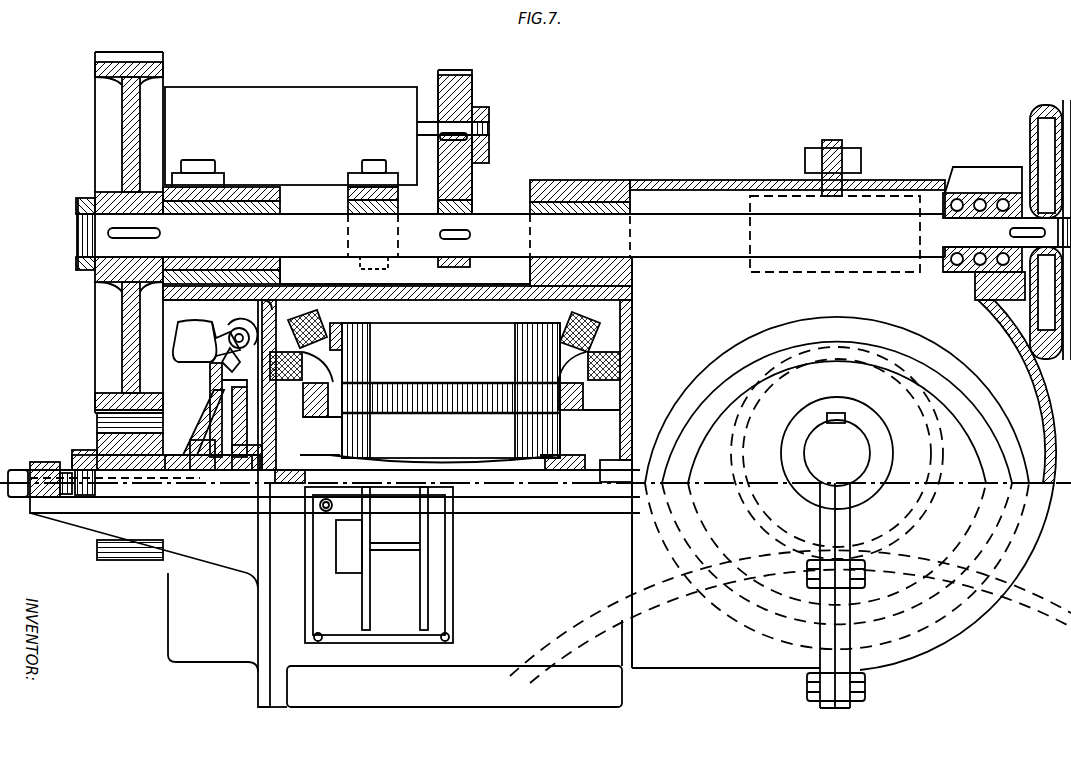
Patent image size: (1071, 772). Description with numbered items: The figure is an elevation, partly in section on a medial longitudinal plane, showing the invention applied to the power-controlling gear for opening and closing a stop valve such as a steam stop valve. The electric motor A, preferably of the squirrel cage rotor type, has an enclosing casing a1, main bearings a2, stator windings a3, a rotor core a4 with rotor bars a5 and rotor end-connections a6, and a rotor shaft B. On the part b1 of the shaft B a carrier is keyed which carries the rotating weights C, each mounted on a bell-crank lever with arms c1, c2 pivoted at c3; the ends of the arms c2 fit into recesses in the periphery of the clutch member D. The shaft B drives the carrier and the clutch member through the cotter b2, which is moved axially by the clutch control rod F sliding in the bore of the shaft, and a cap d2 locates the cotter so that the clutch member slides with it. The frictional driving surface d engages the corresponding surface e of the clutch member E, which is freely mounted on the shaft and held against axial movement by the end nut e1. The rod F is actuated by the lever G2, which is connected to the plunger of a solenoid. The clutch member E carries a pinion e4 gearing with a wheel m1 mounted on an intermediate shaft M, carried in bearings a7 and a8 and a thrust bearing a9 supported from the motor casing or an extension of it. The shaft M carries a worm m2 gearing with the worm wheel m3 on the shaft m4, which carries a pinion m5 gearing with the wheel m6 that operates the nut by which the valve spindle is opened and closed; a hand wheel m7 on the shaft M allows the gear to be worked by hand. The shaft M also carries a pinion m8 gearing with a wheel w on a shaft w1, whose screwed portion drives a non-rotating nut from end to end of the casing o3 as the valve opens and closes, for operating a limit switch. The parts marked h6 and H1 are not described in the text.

The intermediate shaft M is at (137, 248).
The wheel m1 is at (108, 320).
The enclosing casing a1 is at (468, 297).
The casing o3 is at (270, 92).
The wheel w is at (455, 97).
The shaft w1 is at (425, 131).
The pinion m8 is at (452, 208).
The bearing a8 is at (588, 200).
The worm m2 is at (773, 197).
The thrust bearing a9 is at (973, 200).
The hand wheel m7 is at (1033, 115).
The worm wheel m3 is at (702, 342).
The pinion m5 is at (927, 401).
The shaft m4 is at (853, 452).
The wheel m6 is at (655, 598).
The main bearings a2 is at (622, 463).
The rotor core a4 is at (445, 393).
The rotor bars a5 is at (347, 392).
The rotor end-connections a6 is at (308, 395).
The stator windings a3 is at (318, 320).
The bell-crank lever arm c2 is at (444, 356).
The rotating weights C is at (188, 332).
The frictional driving surface d is at (208, 353).
The pivot c3 is at (239, 328).
The bell-crank lever arm c1 is at (216, 337).
The frictional driving surface e is at (210, 373).
The clutch member E is at (203, 406).
The cap d2 is at (222, 385).
The bearing a7 is at (222, 287).
The pinion e4 is at (100, 437).
The end nut e1 is at (87, 462).
The clutch control rod F is at (70, 500).
The lever G2 is at (53, 462).
The rotor shaft B is at (165, 495).
The cotter b2 is at (205, 490).
The shaft part b1 is at (245, 487).
The electric motor A is at (510, 650).
The inspection plate h6 is at (347, 597).
The bracket H1 is at (407, 575).